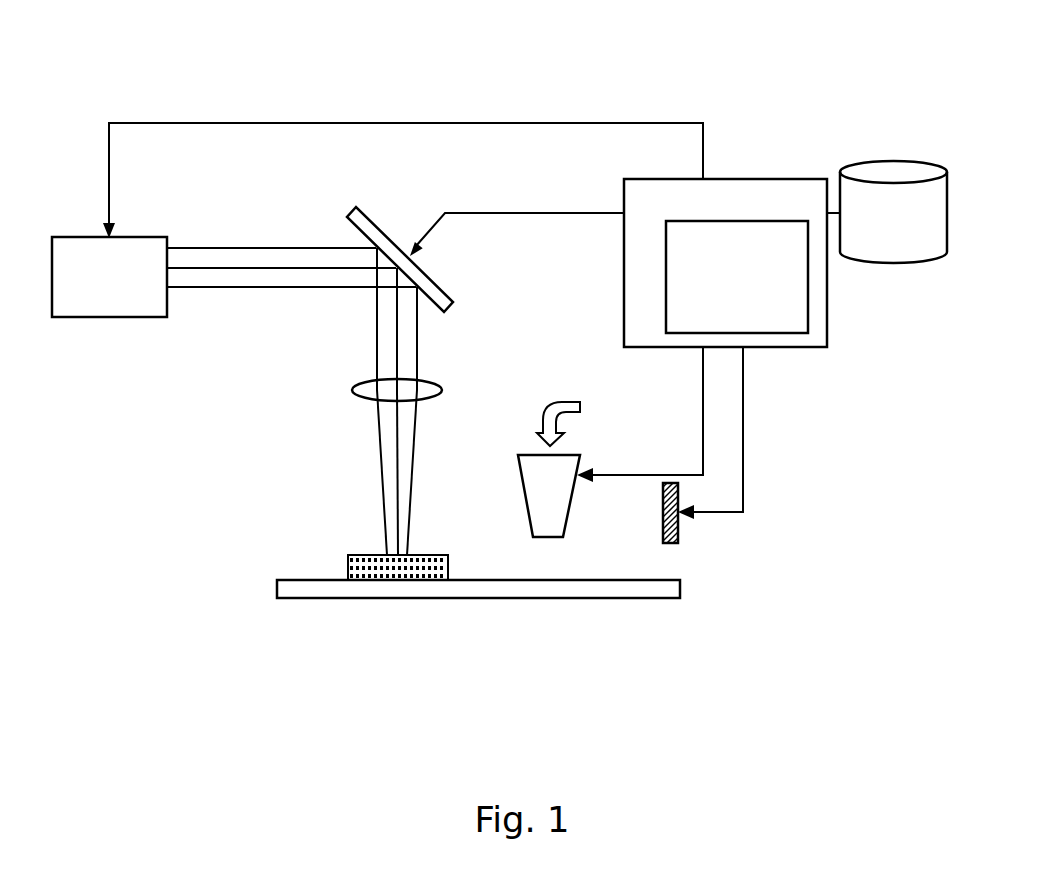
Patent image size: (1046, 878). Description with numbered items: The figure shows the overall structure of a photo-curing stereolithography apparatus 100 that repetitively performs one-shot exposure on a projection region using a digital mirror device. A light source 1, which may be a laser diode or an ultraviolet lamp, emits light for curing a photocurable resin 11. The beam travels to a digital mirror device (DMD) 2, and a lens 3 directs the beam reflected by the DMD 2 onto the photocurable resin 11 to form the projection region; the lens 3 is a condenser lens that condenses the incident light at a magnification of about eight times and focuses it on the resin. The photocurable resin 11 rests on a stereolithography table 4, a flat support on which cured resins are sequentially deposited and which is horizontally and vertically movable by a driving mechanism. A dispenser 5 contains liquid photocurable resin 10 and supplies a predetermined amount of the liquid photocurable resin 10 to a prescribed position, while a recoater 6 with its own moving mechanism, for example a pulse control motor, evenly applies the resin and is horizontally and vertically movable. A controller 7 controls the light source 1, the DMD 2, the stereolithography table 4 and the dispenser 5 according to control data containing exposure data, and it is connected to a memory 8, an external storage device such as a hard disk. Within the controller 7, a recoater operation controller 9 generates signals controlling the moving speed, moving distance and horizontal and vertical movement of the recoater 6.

The stereolithography apparatus 100 is at (762, 66).
The light source 1 is at (150, 237).
The digital mirror device (DMD) 2 is at (372, 210).
The lens 3 is at (441, 388).
The stereolithography table 4 is at (277, 587).
The dispenser 5 is at (570, 522).
The recoater 6 is at (678, 530).
The controller 7 is at (750, 178).
The memory 8 is at (925, 161).
The recoater operation controller 9 is at (808, 254).
The liquid photocurable resin 10 is at (608, 423).
The photocurable resin 11 is at (430, 553).